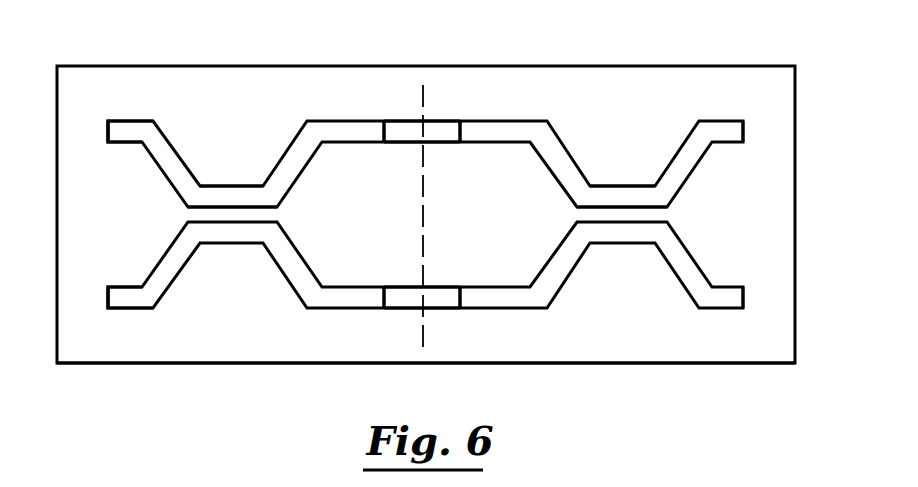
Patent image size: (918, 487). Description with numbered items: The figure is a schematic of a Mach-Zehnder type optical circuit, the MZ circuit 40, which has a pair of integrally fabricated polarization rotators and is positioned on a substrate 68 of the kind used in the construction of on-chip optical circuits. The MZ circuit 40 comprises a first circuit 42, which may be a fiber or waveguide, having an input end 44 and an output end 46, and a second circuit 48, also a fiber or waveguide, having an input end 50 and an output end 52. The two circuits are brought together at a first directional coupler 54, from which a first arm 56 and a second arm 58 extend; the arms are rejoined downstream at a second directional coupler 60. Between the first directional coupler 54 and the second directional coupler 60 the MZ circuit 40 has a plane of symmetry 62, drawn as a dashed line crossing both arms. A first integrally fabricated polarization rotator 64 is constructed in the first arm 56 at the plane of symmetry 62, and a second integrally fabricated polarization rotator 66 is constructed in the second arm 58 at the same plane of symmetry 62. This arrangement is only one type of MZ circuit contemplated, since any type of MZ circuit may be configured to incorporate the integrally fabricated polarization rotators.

The Mach-Zehnder circuit 40 is at (233, 82).
The first circuit 42 is at (127, 120).
The input end 44 is at (108, 131).
The output end 46 is at (743, 131).
The second circuit 48 is at (127, 308).
The input end 50 is at (108, 298).
The output end 52 is at (743, 297).
The first directional coupler 54 is at (227, 182).
The first arm 56 is at (342, 120).
The second arm 58 is at (280, 272).
The second directional coupler 60 is at (617, 181).
The plane of symmetry 62 is at (418, 103).
The first integrally fabricated polarization rotator 64 is at (448, 120).
The second integrally fabricated polarization rotator 66 is at (448, 307).
The substrate 68 is at (242, 363).